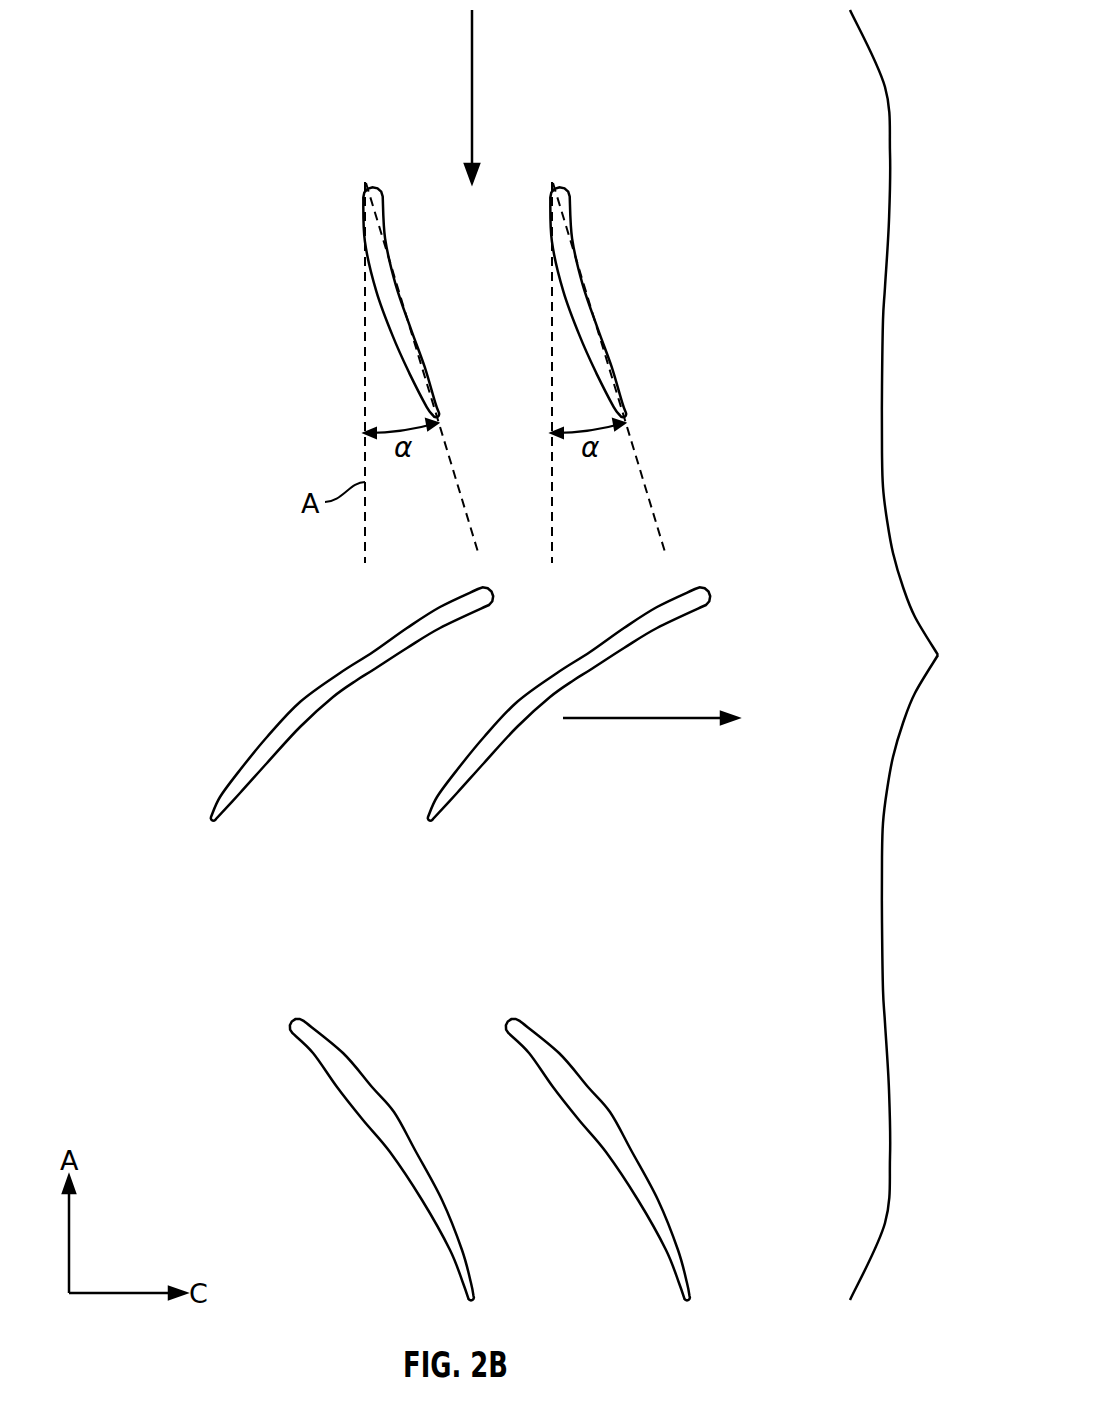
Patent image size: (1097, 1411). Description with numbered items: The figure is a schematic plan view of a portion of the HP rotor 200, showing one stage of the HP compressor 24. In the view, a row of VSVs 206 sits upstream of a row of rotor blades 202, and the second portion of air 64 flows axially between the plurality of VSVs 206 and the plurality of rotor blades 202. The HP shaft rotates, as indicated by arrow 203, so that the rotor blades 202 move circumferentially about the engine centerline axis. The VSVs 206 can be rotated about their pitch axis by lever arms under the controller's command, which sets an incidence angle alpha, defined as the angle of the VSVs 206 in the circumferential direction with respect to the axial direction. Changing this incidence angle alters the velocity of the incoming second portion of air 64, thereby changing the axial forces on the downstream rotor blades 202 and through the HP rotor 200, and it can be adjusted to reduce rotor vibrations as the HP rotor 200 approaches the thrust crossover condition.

The HP compressor 24 is at (238, 70).
The second portion of air 64 is at (473, 88).
The HP rotor 200 is at (754, 69).
The rotor blades 202 is at (353, 658).
The arrow 203 is at (700, 717).
The VSVs 206 is at (390, 287).